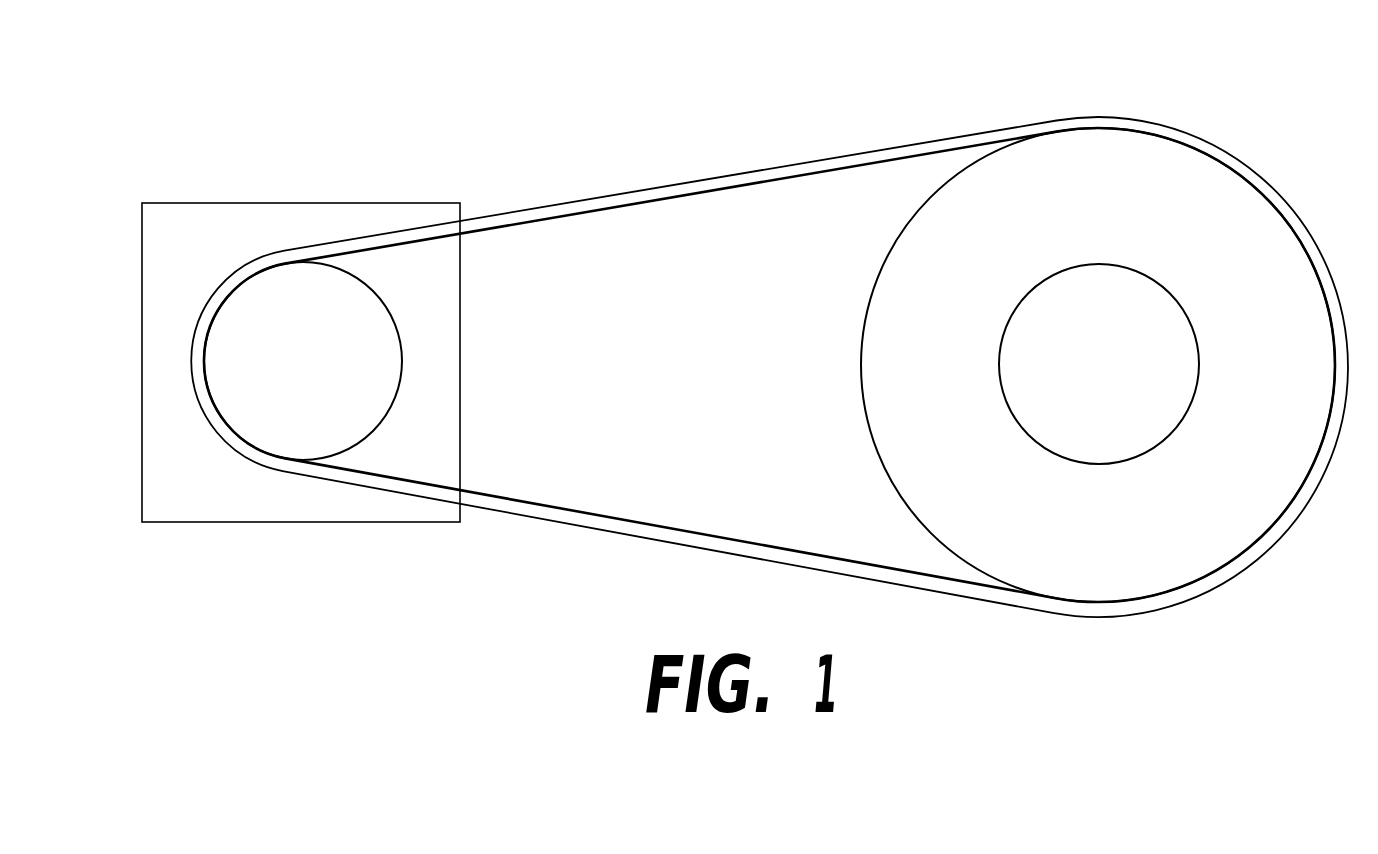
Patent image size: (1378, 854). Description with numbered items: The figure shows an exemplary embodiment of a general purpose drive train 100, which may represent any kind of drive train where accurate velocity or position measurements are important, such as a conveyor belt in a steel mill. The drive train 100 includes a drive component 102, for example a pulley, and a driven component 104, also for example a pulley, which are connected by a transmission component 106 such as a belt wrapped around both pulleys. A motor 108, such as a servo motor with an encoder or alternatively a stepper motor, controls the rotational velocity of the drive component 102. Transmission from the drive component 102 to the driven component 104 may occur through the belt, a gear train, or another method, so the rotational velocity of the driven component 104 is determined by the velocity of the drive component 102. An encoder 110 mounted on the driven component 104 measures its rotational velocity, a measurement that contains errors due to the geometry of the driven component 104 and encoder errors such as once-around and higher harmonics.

The drive train 100 is at (479, 118).
The drive component 102 is at (398, 336).
The driven component 104 is at (1140, 140).
The transmission component 106 is at (662, 183).
The motor 108 is at (142, 453).
The encoder 110 is at (1117, 265).